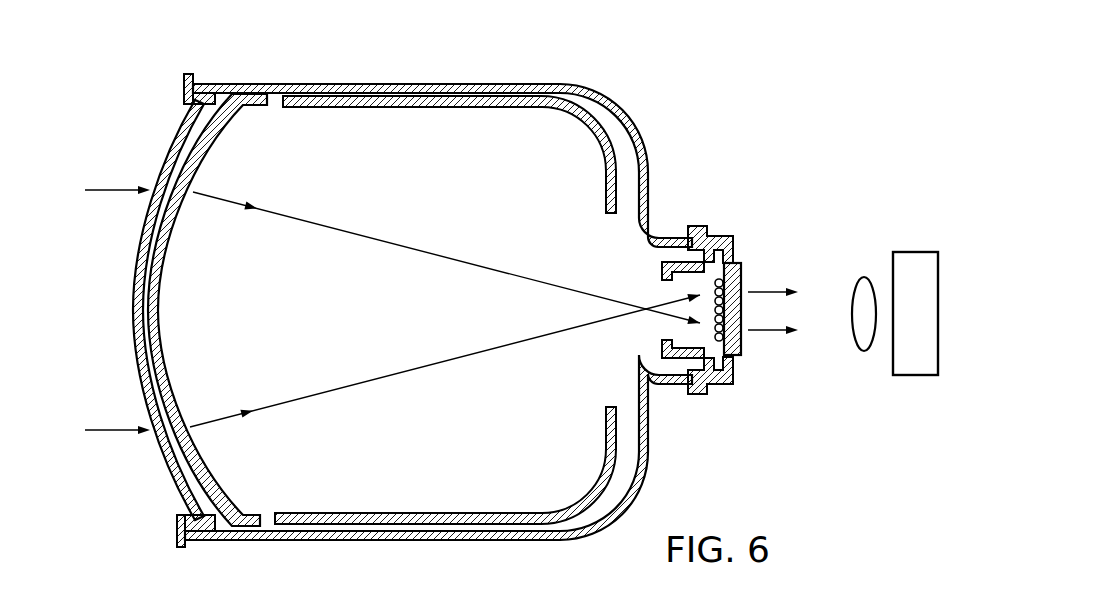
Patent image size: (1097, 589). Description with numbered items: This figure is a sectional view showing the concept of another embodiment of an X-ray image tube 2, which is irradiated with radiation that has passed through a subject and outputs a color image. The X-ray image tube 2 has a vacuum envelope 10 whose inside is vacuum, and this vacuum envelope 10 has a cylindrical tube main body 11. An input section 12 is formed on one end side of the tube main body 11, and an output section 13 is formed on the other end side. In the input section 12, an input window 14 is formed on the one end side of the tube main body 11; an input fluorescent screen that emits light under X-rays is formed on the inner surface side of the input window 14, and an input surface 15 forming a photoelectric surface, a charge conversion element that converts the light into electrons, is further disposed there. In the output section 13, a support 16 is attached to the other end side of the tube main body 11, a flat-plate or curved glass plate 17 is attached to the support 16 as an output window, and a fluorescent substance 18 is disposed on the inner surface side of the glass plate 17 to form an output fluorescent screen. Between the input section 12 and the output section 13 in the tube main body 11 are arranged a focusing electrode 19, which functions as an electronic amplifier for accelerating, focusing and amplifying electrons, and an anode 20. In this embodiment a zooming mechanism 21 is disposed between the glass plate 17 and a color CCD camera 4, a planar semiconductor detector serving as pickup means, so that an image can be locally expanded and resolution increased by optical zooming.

The X-ray image tube 2 is at (599, 63).
The color CCD camera 4 is at (912, 252).
The vacuum envelope 10 is at (625, 113).
The tube main body 11 is at (356, 84).
The input section 12 is at (175, 152).
The output section 13 is at (717, 230).
The input window 14 is at (140, 260).
The input surface 15 is at (152, 325).
The support 16 is at (715, 390).
The glass plate 17 is at (742, 272).
The fluorescent substance 18 is at (741, 343).
The focusing electrode 19 is at (473, 96).
The anode 20 is at (688, 262).
The zooming mechanism 21 is at (865, 277).